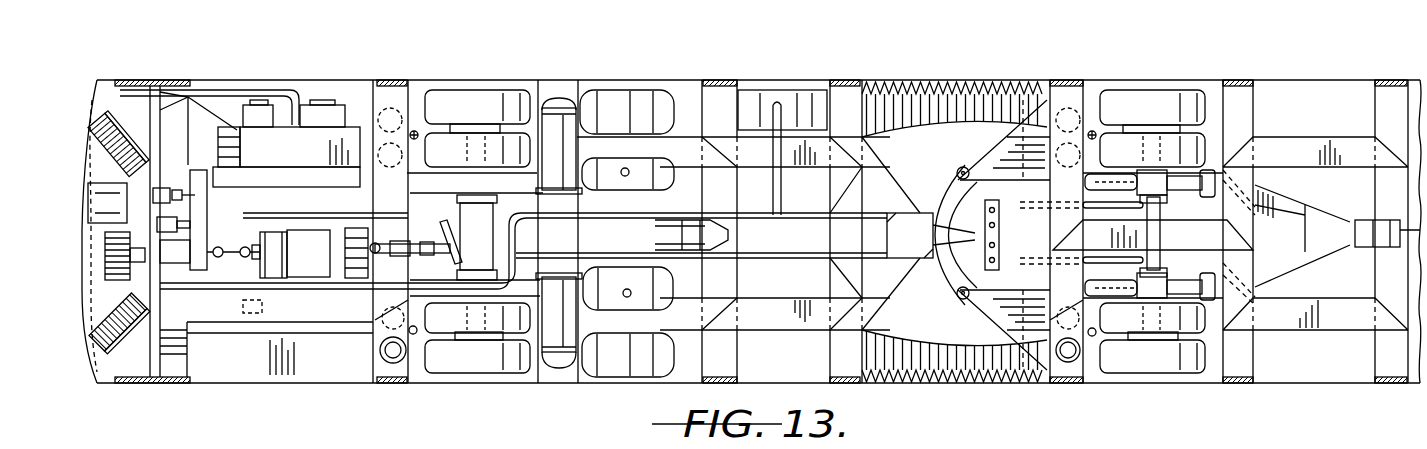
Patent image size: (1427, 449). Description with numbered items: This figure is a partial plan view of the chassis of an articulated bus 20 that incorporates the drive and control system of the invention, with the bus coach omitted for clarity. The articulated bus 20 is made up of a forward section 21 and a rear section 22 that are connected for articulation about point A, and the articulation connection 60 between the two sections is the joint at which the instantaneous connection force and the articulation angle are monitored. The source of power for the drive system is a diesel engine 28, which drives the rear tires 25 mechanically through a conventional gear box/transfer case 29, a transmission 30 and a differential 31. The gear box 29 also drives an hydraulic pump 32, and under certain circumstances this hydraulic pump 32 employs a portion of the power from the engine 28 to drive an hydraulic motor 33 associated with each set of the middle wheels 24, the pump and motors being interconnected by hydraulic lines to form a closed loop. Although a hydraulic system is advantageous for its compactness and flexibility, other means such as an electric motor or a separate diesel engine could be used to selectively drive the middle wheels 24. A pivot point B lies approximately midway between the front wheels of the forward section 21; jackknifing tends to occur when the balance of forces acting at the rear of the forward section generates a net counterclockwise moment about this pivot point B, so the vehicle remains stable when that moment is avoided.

The articulated bus 20 is at (1333, 76).
The forward section 21 is at (1300, 387).
The rear section 22 is at (367, 385).
The middle wheels 24 is at (1163, 100).
The rear tires 25 is at (460, 98).
The diesel engine 28 is at (316, 158).
The gear box/transfer case 29 is at (198, 264).
The transmission 30 is at (317, 268).
The differential 31 is at (482, 240).
The hydraulic pump 32 is at (171, 262).
The hydraulic motor 33 is at (1213, 152).
The articulation connection 60 is at (935, 180).
The articulation point A is at (948, 235).
The pivot point B is at (1157, 235).